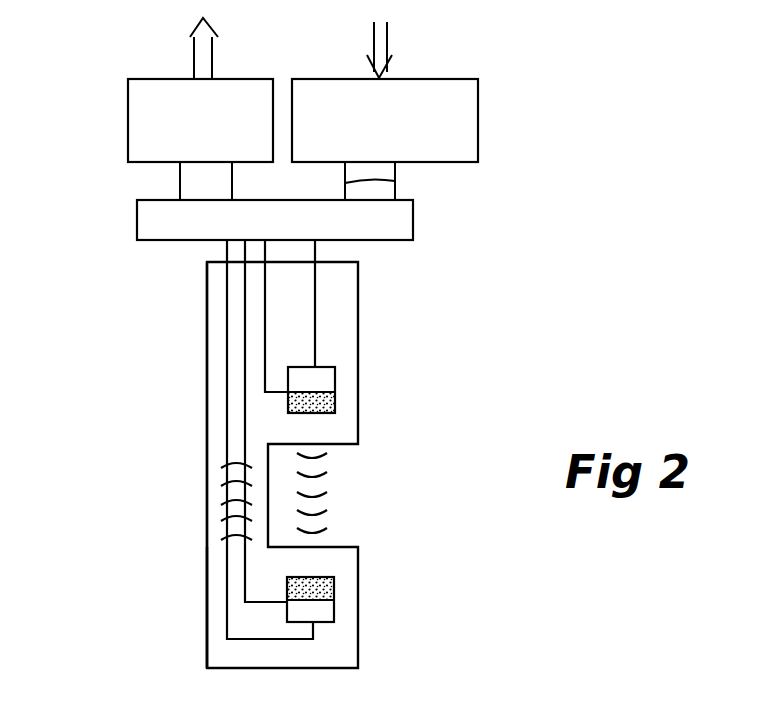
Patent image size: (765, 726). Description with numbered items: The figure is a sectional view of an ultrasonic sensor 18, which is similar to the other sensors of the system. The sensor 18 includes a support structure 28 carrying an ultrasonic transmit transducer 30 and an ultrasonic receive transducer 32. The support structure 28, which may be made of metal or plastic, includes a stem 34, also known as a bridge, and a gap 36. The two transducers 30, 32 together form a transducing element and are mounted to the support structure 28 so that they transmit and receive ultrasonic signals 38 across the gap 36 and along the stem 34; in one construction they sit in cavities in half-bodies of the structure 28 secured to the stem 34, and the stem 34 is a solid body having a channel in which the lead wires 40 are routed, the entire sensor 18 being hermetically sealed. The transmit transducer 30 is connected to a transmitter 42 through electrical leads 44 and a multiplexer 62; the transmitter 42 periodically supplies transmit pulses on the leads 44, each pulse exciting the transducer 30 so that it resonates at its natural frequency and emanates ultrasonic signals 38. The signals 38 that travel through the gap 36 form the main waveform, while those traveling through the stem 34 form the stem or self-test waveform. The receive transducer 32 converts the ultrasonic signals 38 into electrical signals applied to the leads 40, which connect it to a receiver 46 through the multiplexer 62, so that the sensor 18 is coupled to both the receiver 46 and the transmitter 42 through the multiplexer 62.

The ultrasonic sensor 18 is at (374, 304).
The support structure 28 is at (207, 352).
The ultrasonic transmit transducer 30 is at (335, 390).
The ultrasonic receive transducer 32 is at (334, 598).
The stem 34 is at (207, 593).
The gap 36 is at (372, 471).
The ultrasonic signals 38 is at (221, 490).
The electrical leads 40 is at (232, 187).
The transmitter 42 is at (478, 91).
The electrical leads 44 is at (395, 170).
The receiver 46 is at (128, 82).
The multiplexer 62 is at (413, 218).